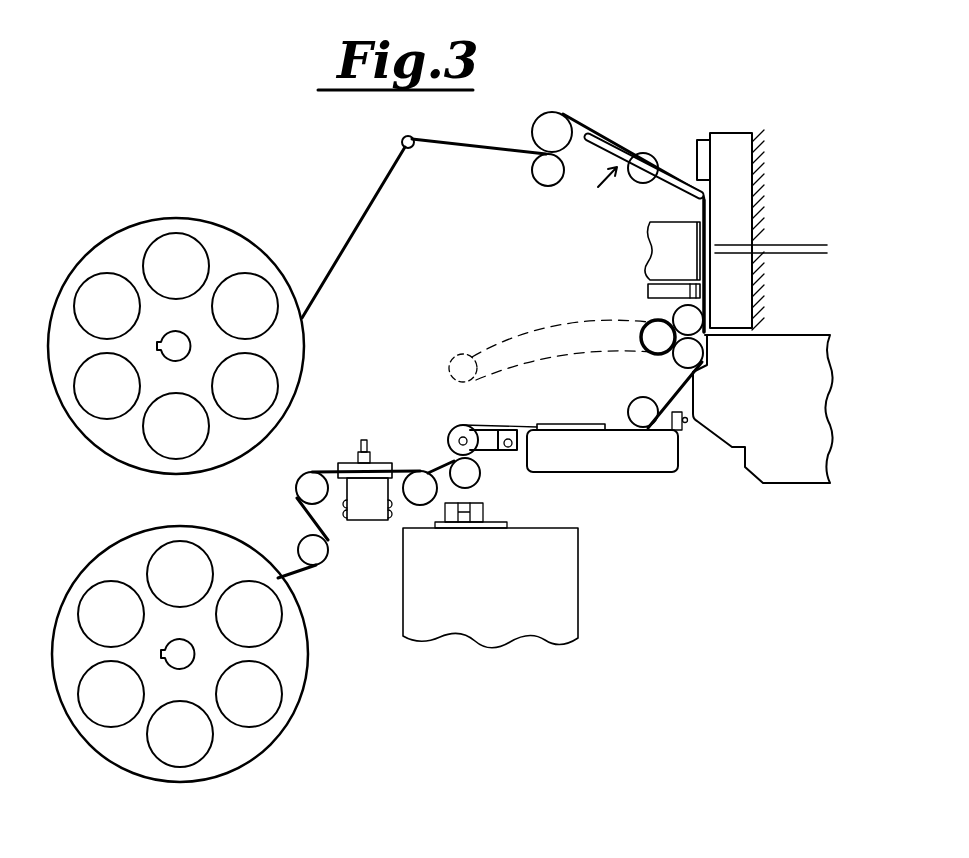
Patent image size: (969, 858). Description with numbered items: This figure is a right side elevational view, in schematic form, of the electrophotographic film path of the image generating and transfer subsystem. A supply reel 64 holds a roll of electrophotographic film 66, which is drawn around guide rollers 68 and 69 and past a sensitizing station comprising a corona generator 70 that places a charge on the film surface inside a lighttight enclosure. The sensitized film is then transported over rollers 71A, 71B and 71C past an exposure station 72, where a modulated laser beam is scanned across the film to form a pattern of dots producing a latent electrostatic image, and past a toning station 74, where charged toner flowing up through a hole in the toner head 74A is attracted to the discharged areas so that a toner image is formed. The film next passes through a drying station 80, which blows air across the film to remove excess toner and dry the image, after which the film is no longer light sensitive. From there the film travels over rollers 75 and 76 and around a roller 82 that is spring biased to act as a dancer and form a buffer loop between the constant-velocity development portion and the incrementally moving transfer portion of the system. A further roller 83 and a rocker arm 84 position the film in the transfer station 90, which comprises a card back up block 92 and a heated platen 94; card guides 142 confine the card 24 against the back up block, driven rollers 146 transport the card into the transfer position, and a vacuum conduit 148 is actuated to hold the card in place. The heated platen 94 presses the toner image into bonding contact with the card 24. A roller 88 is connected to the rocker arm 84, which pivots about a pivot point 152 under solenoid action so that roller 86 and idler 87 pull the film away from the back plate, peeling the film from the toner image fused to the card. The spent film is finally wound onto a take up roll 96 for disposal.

The card 24 is at (733, 168).
The supply reel 64 is at (307, 673).
The electrophotographic film 66 is at (328, 527).
The guide roller 68 is at (302, 528).
The guide roller 69 is at (327, 500).
The corona generator 70 is at (350, 462).
The roller 71A is at (417, 471).
The roller 71B is at (468, 425).
The roller 71C is at (478, 484).
The exposure station 72 is at (530, 585).
The toning station 74 is at (650, 490).
The toner head 74A is at (545, 424).
The roller 75 is at (636, 400).
The roller 76 is at (674, 354).
The drying station 80 is at (742, 408).
The roller 82 is at (641, 332).
The roller 83 is at (674, 318).
The rocker arm 84 is at (672, 194).
The roller 86 is at (562, 112).
The idler 87 is at (540, 157).
The roller 88 is at (598, 182).
The transfer station 90 is at (652, 238).
The card back up block 92 is at (747, 263).
The heated platen 94 is at (707, 232).
The take up roll 96 is at (190, 217).
The card guides 142 is at (690, 160).
The driven rollers 146 is at (648, 290).
The vacuum conduit 148 is at (813, 243).
The pivot point 152 is at (648, 160).